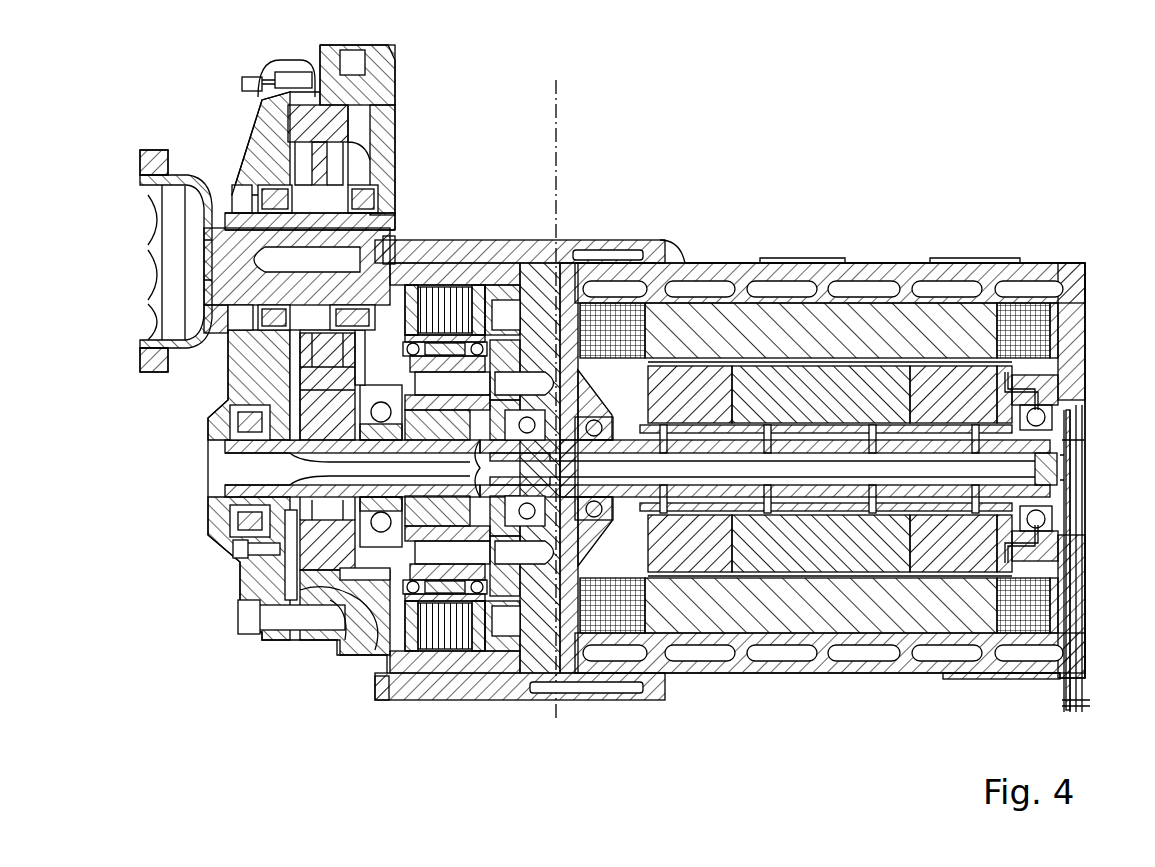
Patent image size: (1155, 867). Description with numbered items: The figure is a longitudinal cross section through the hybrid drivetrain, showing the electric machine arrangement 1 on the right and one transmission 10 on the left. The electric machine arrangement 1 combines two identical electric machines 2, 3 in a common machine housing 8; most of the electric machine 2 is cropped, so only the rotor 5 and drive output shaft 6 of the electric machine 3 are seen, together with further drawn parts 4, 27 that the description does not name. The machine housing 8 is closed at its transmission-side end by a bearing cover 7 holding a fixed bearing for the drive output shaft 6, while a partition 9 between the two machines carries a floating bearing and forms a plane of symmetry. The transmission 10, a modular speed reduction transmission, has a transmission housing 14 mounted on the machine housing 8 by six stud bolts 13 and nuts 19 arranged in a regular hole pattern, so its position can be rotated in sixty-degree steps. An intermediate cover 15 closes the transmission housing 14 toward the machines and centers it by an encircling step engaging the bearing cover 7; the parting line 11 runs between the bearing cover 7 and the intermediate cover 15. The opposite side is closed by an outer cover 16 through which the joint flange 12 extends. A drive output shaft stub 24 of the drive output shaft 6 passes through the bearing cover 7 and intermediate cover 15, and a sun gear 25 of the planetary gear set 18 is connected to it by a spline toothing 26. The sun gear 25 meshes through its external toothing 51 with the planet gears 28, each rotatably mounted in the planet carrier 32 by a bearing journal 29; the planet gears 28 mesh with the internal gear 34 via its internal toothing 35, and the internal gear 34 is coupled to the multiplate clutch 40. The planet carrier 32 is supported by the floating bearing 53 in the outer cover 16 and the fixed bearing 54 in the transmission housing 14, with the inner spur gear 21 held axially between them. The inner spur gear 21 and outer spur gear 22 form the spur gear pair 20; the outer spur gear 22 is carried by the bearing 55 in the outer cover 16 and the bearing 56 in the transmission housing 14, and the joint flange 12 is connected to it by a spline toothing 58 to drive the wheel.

The electric machine arrangement 1 is at (956, 166).
The electric machine 2 is at (1086, 232).
The electric machine 3 is at (802, 236).
The rotor 4 is at (586, 266).
The rotor 5 is at (1022, 373).
The drive output shaft 6 is at (945, 438).
The bearing cover 7 is at (560, 262).
The machine housing 8 is at (904, 262).
The partition 9 is at (1072, 335).
The transmission 10 is at (196, 626).
The parting line 11 is at (562, 132).
The joint flange 12 is at (148, 141).
The stud bolt 13 is at (612, 254).
The transmission housing 14 is at (502, 240).
The intermediate cover 15 is at (552, 673).
The outer cover 16 is at (224, 378).
The planetary gear set 18 is at (522, 645).
The nut 19 is at (408, 236).
The spur gear pair 20 is at (365, 123).
The inner spur gear 21 is at (252, 515).
The outer spur gear 22 is at (258, 114).
The drive output shaft stub 24 is at (518, 300).
The sun gear 25 is at (430, 340).
The spline toothing 26 is at (545, 300).
The bearing seat 27 is at (578, 673).
The planet gear 28 is at (444, 288).
The bearing journal 29 is at (470, 300).
The planet carrier 32 is at (232, 462).
The internal gear 34 is at (432, 660).
The internal toothing 35 is at (482, 660).
The multiplate clutch 40 is at (458, 650).
The external toothing 51 is at (382, 622).
The floating bearing 53 is at (252, 425).
The fixed bearing 54 is at (262, 586).
The bearing 55 is at (172, 268).
The bearing 56 is at (235, 340).
The spline toothing 58 is at (168, 242).